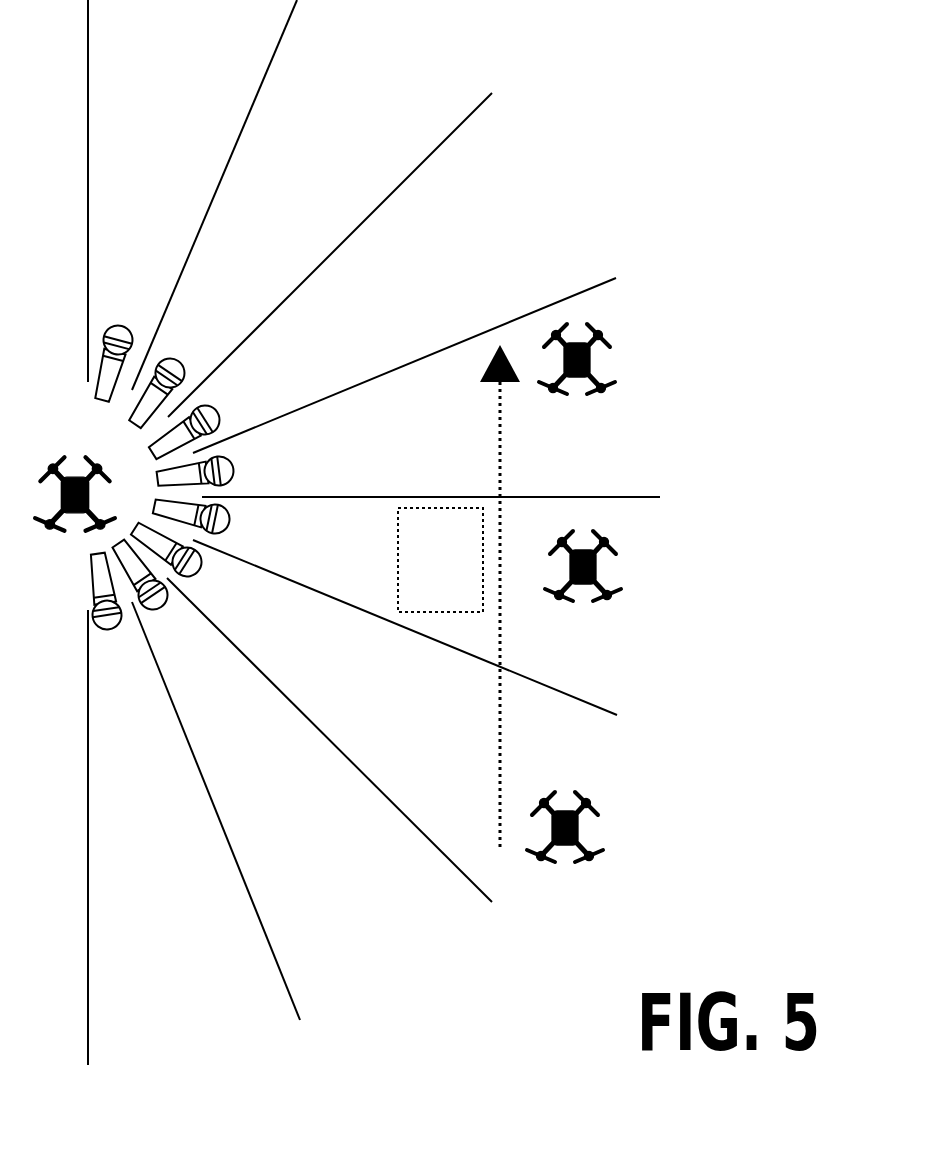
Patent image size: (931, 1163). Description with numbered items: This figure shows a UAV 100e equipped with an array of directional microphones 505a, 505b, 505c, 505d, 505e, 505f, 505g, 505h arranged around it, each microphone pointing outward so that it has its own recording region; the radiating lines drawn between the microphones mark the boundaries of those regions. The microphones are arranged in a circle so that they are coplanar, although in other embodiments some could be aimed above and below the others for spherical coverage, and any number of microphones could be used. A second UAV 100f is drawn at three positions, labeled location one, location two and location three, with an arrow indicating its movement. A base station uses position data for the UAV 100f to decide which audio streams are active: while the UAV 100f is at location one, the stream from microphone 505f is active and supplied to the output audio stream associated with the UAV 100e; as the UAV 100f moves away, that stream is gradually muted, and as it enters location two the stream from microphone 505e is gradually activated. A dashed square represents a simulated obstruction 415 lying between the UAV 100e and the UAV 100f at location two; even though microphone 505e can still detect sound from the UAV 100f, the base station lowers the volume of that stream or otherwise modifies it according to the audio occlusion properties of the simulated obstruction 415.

The UAV 100e is at (75, 455).
The UAV 100f is at (579, 401).
The simulated obstruction 415 is at (448, 503).
The microphone 505a is at (120, 312).
The microphone 505b is at (183, 344).
The microphone 505c is at (230, 405).
The microphone 505d is at (245, 464).
The microphone 505e is at (240, 521).
The microphone 505f is at (211, 578).
The microphone 505g is at (169, 616).
The microphone 505h is at (111, 640).